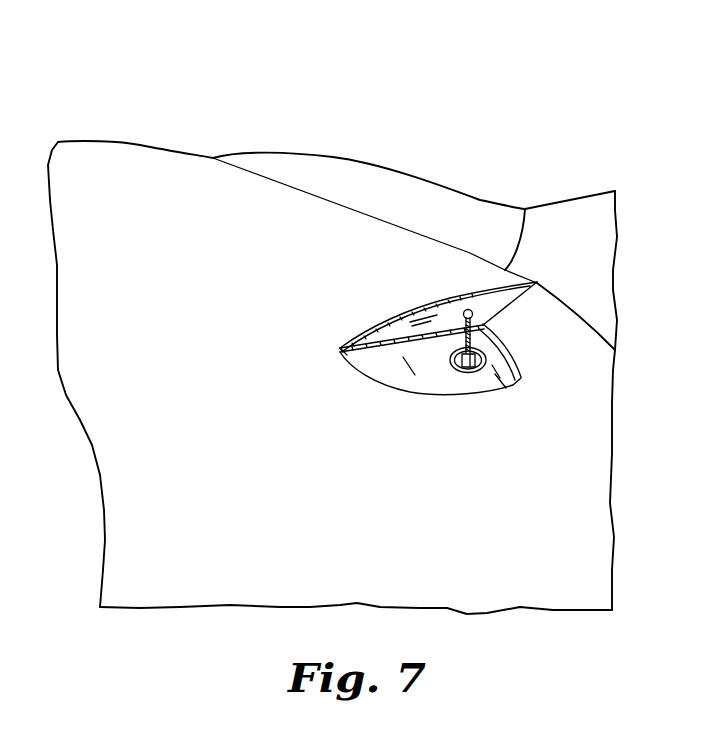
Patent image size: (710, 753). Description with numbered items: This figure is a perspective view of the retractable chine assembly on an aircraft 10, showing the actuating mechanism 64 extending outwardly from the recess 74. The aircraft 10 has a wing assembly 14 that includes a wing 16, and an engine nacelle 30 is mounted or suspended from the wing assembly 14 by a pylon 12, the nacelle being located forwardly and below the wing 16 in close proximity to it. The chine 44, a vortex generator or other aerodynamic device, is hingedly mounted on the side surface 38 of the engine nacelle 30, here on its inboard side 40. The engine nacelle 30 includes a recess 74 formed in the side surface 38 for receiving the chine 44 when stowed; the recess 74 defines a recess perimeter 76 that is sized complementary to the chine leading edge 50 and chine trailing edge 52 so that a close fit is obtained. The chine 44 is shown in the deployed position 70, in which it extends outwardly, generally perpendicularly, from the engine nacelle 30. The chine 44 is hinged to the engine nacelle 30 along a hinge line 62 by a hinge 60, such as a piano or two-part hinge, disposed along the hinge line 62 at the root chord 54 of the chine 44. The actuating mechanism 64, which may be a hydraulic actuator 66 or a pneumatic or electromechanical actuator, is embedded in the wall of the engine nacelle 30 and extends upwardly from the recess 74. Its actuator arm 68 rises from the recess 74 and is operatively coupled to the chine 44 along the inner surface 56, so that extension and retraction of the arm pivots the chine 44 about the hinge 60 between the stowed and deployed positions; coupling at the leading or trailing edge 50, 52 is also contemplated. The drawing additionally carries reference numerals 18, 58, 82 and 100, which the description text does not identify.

The aircraft 10 is at (498, 121).
The pylon 12 is at (492, 236).
The wing assembly 14 is at (589, 182).
The wing 16 is at (590, 267).
The seam between panels 18 is at (537, 222).
The engine nacelle 30 is at (155, 223).
The side surface 38 is at (375, 350).
The inboard side 40 is at (275, 542).
The chine 44 is at (422, 286).
The chine leading edge 50 is at (343, 343).
The chine trailing edge 52 is at (503, 308).
The root chord 54 is at (365, 338).
The inner surface 56 is at (465, 300).
The lower edge of clip plate 58 is at (440, 300).
The hinge 60 is at (385, 373).
The hinge line 62 is at (345, 358).
The actuating mechanism 64 is at (478, 388).
The hydraulic actuator 66 is at (488, 385).
The actuator arm 68 is at (540, 358).
The deployed position 70 is at (395, 318).
The recess 74 is at (435, 380).
The recess perimeter 76 is at (368, 381).
The flange 82 is at (528, 364).
The clip assembly 100 is at (530, 397).